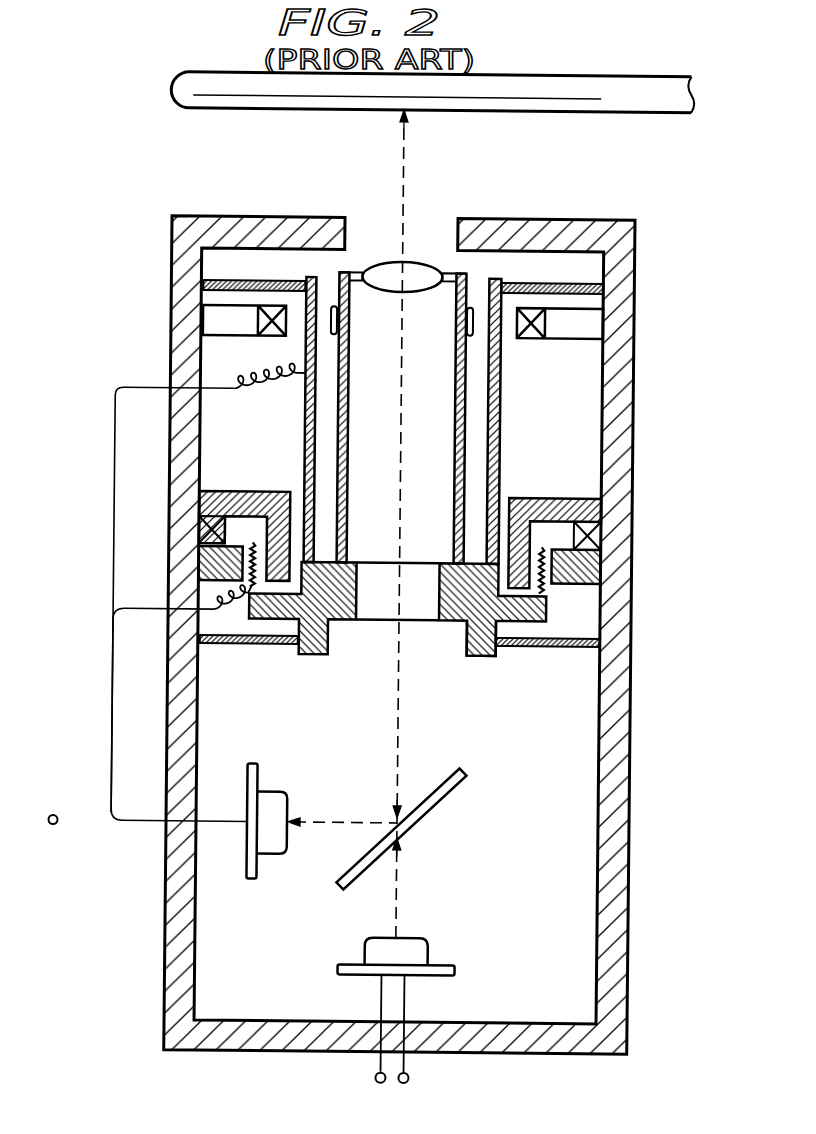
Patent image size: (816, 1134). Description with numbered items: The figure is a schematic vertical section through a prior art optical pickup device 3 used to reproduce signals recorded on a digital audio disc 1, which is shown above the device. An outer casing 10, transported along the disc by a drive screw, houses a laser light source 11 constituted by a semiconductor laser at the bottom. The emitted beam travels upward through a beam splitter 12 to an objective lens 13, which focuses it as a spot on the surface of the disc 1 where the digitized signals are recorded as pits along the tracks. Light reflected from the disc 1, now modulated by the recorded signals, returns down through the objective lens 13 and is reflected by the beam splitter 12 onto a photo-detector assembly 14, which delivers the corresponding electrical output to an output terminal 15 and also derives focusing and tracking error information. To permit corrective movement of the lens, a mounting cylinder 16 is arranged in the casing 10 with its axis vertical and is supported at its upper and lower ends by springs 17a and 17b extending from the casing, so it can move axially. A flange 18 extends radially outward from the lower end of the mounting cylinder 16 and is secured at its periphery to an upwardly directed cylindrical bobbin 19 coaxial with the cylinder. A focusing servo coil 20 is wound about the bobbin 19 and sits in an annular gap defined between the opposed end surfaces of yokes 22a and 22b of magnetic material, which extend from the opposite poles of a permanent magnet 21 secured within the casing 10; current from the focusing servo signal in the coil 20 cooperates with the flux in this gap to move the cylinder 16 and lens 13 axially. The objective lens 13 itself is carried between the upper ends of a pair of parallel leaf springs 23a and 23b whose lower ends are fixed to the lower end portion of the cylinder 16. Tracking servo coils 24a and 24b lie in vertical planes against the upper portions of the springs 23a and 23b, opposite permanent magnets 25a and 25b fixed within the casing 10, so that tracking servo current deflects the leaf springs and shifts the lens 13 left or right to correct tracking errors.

The digital audio disc 1 is at (668, 54).
The pickup device 3 is at (706, 201).
The outer casing 10 is at (622, 503).
The laser light source 11 is at (430, 938).
The beam splitter 12 is at (440, 798).
The objective lens 13 is at (386, 288).
The photo-detector assembly 14 is at (273, 857).
The output terminal 15 is at (58, 828).
The mounting cylinder 16 is at (501, 433).
The spring 17a is at (240, 280).
The spring 17b is at (255, 646).
The flange 18 is at (521, 646).
The cylindrical bobbin 19 is at (546, 520).
The focusing servo coil 20 is at (543, 592).
The permanent magnet 21 is at (596, 535).
The yoke 22a is at (590, 575).
The yoke 22b is at (468, 648).
The leaf spring 23a is at (343, 409).
The leaf spring 23b is at (459, 458).
The tracking servo coil 24a is at (335, 306).
The tracking servo coil 24b is at (471, 306).
The permanent magnet 25a is at (270, 337).
The permanent magnet 25b is at (531, 338).